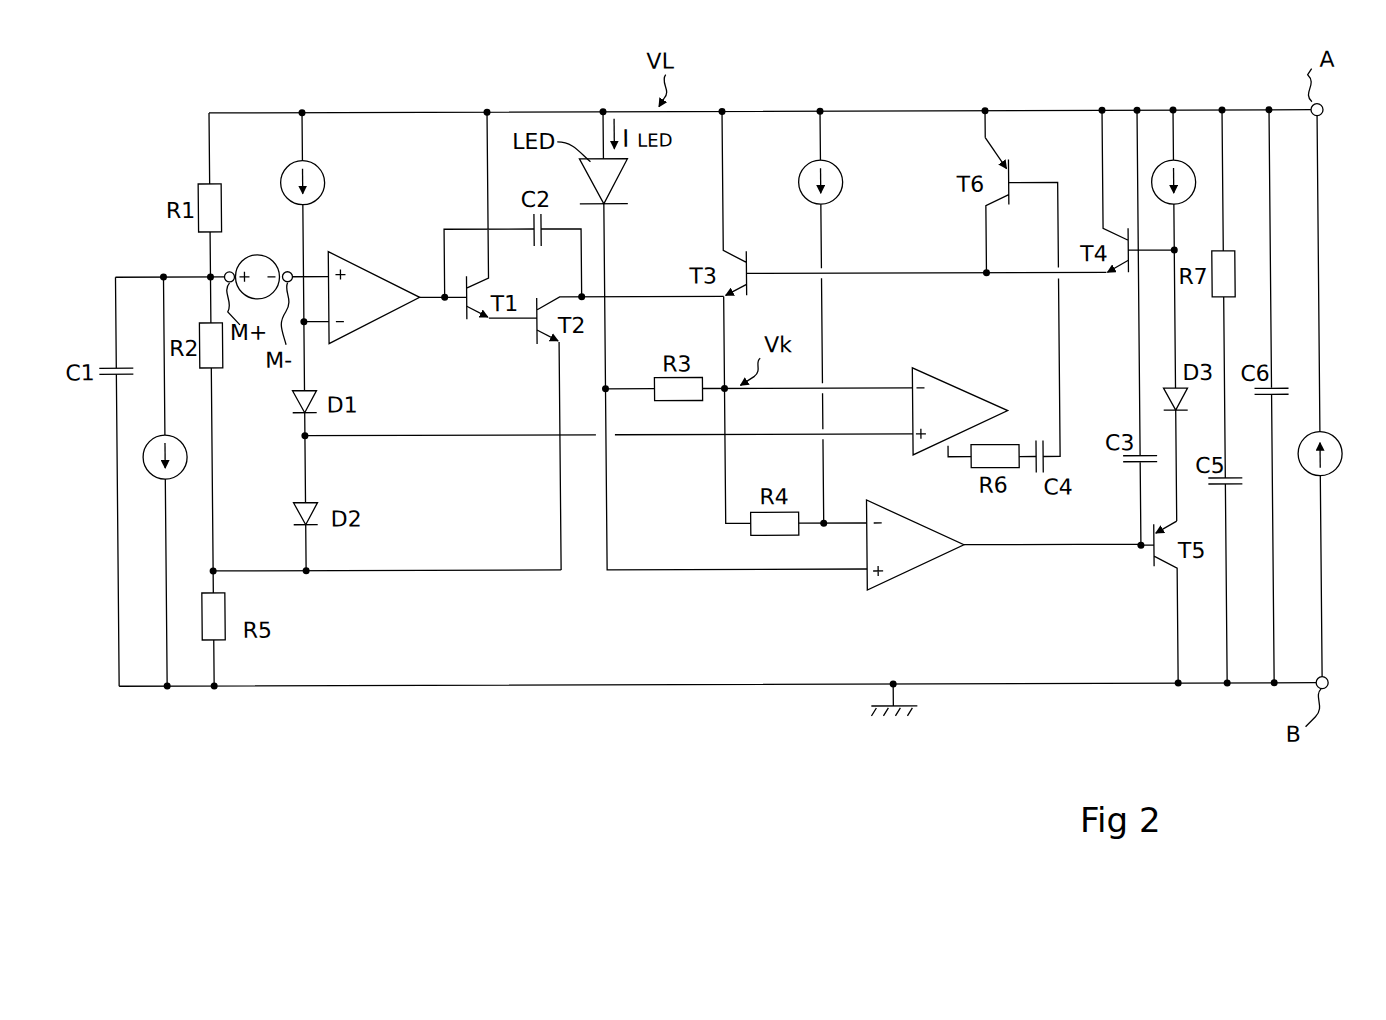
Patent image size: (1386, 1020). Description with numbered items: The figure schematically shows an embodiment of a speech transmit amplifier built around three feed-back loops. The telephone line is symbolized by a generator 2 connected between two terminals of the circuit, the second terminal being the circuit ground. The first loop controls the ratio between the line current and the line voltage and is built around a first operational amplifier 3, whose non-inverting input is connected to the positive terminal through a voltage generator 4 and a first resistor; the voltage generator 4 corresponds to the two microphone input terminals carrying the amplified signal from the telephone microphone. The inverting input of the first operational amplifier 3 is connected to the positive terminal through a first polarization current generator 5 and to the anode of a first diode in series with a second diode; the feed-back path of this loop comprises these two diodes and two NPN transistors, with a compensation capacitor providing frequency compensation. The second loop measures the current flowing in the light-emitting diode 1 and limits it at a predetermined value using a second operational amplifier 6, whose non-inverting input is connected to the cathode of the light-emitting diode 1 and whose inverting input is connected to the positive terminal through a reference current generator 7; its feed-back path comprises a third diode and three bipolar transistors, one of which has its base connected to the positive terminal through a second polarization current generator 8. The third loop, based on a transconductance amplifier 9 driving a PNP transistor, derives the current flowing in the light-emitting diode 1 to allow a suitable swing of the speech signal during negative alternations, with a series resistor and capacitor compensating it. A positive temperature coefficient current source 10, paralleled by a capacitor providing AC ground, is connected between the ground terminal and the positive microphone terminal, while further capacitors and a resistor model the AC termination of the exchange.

The LED 1 is at (617, 193).
The generator 2 is at (1340, 462).
The first operational amplifier A1 3 is at (364, 277).
The voltage generator 4 is at (258, 256).
The first polarization current generator 5 is at (323, 183).
The second operational amplifier A2 6 is at (920, 532).
The reference current generator 7 is at (842, 182).
The second polarization current generator 8 is at (1179, 163).
The transconductance amplifier gm 9 is at (945, 385).
The positive temperature coefficient current source 10 is at (170, 435).